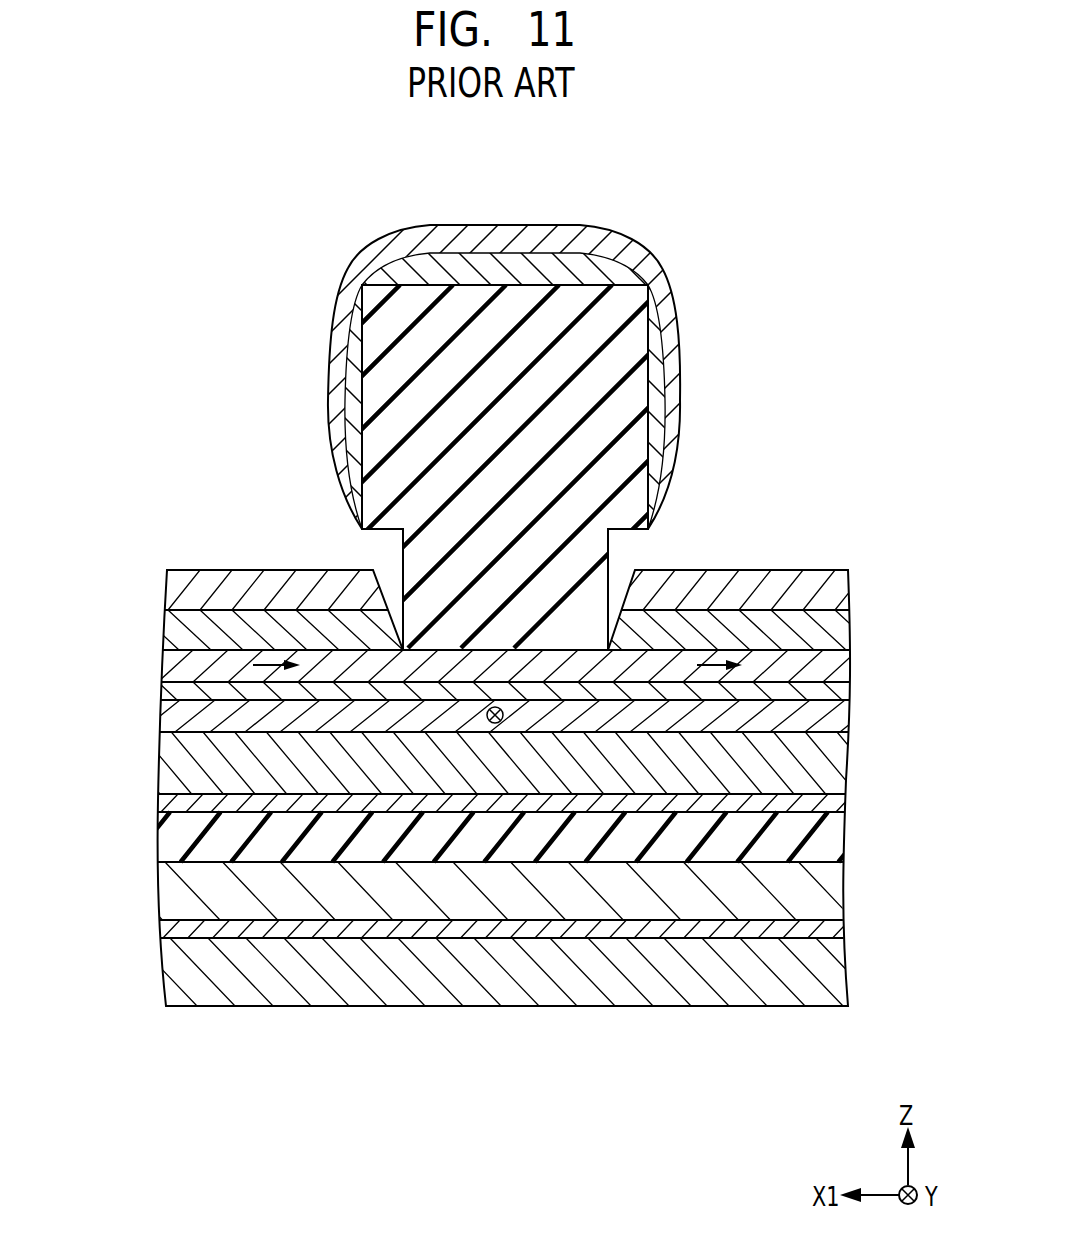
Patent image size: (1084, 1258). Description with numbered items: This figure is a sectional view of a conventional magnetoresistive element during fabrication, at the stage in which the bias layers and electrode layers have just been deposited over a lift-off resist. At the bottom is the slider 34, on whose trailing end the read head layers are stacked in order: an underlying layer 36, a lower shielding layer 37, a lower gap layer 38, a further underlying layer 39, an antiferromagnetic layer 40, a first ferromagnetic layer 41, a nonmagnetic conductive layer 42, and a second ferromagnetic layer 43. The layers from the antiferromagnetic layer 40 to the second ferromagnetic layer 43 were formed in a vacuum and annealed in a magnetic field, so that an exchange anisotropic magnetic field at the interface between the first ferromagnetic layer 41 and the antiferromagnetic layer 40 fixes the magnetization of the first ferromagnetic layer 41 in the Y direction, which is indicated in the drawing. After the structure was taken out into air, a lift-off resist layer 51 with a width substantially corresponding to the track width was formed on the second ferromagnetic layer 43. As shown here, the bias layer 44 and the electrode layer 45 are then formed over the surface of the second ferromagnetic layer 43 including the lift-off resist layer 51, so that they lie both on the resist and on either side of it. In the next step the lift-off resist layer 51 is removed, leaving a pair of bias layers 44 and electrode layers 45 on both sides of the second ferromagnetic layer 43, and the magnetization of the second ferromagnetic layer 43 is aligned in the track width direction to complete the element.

The slider 34 is at (812, 982).
The underlying layer 36 is at (818, 928).
The lower shielding layer 37 is at (803, 893).
The lower gap layer 38 is at (822, 840).
The underlying layer 39 is at (830, 800).
The antiferromagnetic layer 40 is at (830, 770).
The first ferromagnetic layer 41 is at (827, 715).
The nonmagnetic conductive layer 42 is at (830, 693).
The second ferromagnetic layer 43 is at (830, 662).
The bias layer 44 is at (498, 275).
The electrode layer 45 is at (668, 330).
The lift-off resist layer 51 is at (622, 398).